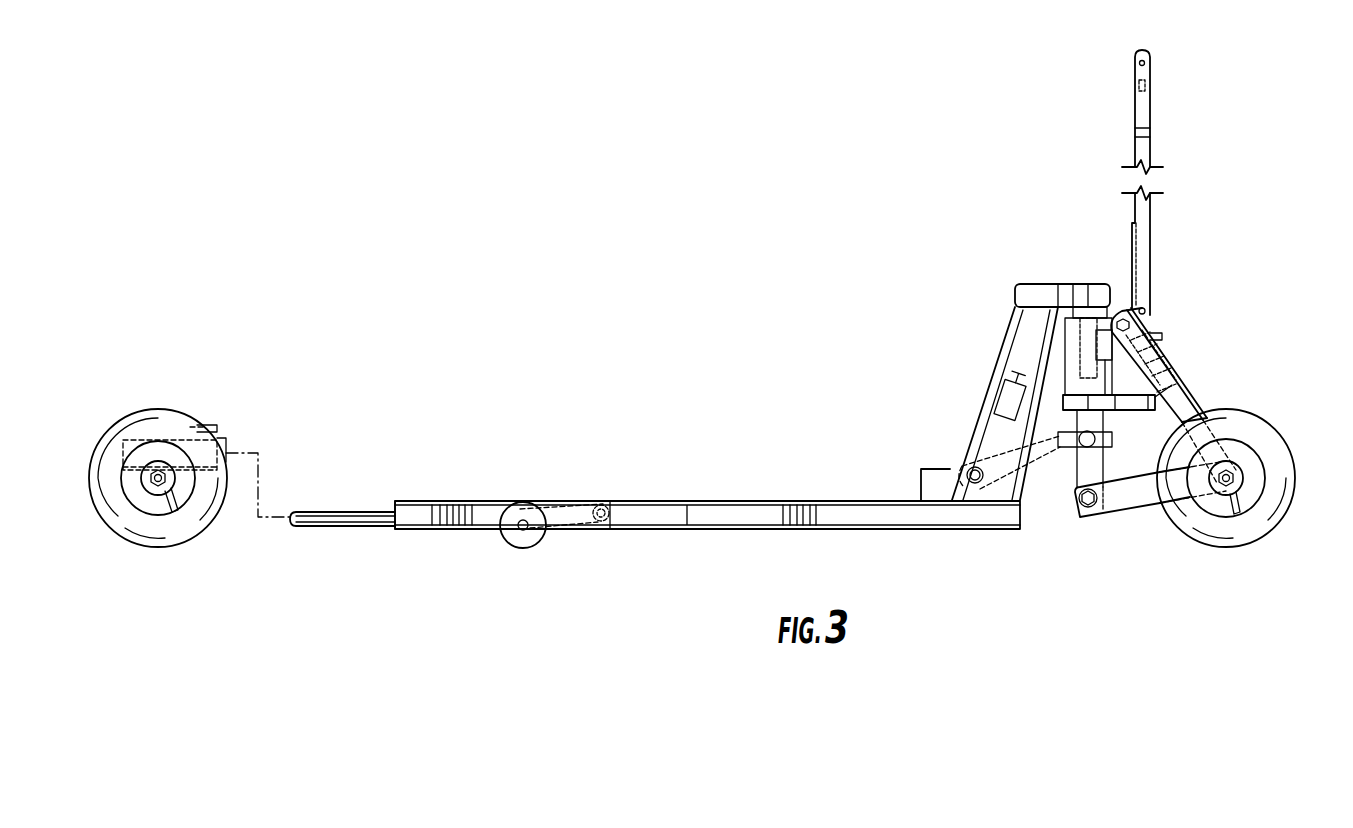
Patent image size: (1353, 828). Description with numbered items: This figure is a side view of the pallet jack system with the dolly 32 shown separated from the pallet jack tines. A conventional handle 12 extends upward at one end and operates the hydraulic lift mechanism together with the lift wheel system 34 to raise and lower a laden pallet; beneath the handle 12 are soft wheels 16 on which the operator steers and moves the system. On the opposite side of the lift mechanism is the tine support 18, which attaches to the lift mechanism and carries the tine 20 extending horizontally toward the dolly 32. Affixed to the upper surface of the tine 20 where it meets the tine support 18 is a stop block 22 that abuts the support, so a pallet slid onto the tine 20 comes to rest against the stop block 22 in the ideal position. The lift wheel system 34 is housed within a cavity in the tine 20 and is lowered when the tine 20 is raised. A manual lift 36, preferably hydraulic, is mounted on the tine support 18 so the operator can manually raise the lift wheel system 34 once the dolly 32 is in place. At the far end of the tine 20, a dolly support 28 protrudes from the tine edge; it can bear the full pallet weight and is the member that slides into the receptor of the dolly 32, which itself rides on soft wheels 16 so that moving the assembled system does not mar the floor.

The handle 12 is at (1145, 262).
The soft wheels 16 is at (152, 527).
The tine support 18 is at (1024, 340).
The tine 20 is at (747, 514).
The stop block 22 is at (940, 480).
The dolly support 28 is at (345, 522).
The dolly 32 is at (233, 398).
The lift wheel system 34 is at (523, 540).
The manual lift 36 is at (394, 503).